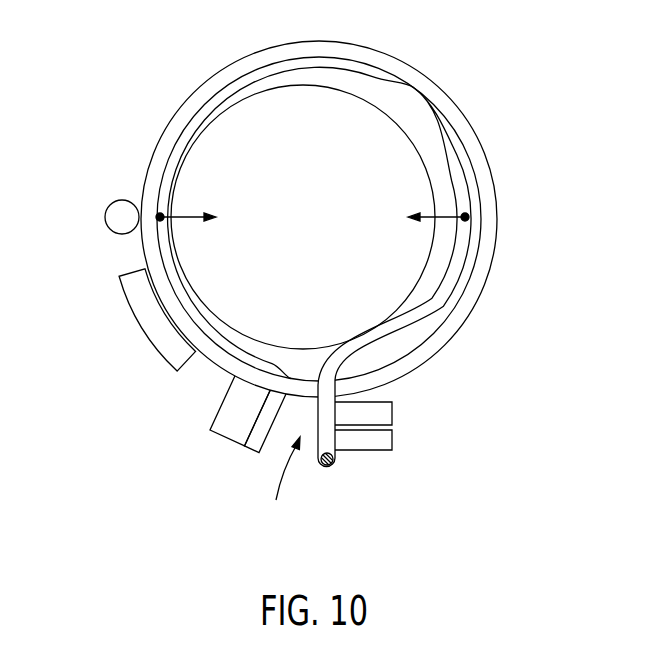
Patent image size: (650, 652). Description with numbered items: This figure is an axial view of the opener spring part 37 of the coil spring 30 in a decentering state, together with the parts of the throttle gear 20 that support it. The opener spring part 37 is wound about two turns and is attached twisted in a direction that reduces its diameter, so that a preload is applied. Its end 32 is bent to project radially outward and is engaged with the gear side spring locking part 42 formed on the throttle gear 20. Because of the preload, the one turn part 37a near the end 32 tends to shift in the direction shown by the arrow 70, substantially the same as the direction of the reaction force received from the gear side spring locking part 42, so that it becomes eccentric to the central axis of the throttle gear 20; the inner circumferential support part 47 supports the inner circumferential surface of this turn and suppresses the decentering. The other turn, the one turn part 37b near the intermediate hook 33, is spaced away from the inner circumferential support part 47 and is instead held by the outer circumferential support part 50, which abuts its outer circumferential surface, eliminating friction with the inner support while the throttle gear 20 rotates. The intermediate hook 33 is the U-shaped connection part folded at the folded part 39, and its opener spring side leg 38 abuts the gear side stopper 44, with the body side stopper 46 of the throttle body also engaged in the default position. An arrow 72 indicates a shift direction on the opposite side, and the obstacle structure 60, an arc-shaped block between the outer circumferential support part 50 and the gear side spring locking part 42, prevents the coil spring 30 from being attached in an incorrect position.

The opener spring part 37 is at (485, 92).
The coil spring 30 is at (470, 318).
The one turn part 37a is at (167, 183).
The one turn part 37b is at (152, 255).
The opener spring side leg 38 is at (323, 447).
The folded part 39 is at (330, 470).
The inner circumferential support part 47 is at (233, 138).
The throttle gear 20 is at (303, 217).
The outer circumferential support part 50 is at (117, 219).
The obstacle structure 60 is at (135, 322).
The arrow 70 is at (183, 221).
The movement direction 72 is at (443, 220).
The gear side spring locking part 42 is at (223, 425).
The end 32 is at (253, 443).
The intermediate hook 33 is at (282, 486).
The gear side stopper 44 is at (382, 415).
The body side stopper 46 is at (377, 443).